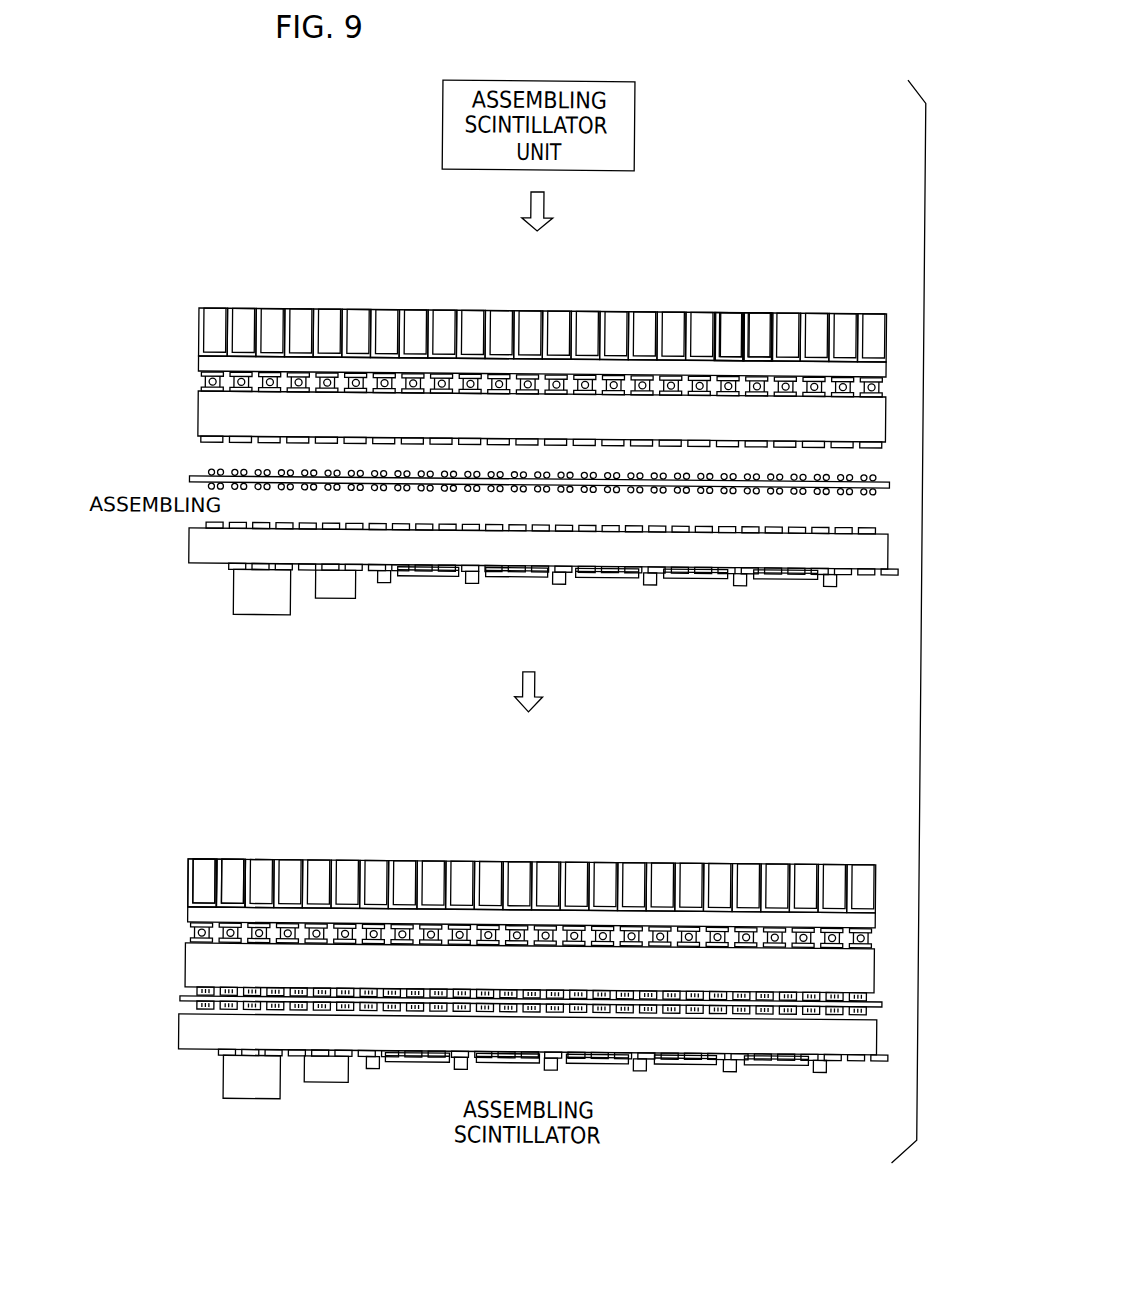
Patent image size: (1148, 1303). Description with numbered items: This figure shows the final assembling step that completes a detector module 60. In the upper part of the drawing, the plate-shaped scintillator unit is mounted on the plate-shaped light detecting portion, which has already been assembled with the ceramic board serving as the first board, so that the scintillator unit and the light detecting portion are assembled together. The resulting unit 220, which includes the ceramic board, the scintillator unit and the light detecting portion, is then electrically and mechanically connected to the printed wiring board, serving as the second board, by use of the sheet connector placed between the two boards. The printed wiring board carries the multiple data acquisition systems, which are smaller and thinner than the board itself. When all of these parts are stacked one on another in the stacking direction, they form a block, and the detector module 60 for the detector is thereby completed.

The detector module 60 is at (436, 820).
The unit 220 is at (141, 252).